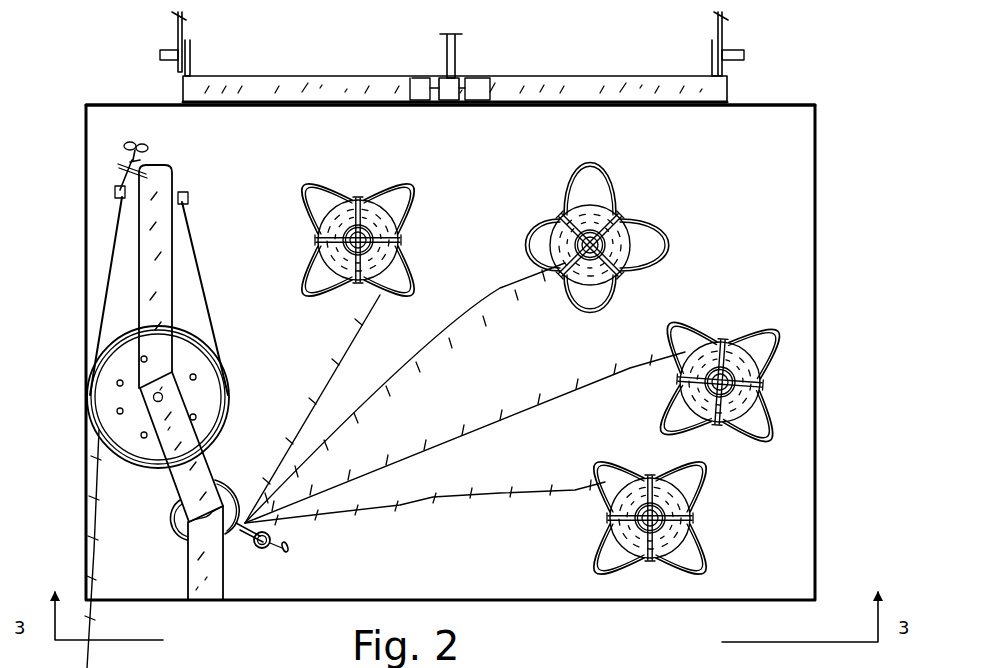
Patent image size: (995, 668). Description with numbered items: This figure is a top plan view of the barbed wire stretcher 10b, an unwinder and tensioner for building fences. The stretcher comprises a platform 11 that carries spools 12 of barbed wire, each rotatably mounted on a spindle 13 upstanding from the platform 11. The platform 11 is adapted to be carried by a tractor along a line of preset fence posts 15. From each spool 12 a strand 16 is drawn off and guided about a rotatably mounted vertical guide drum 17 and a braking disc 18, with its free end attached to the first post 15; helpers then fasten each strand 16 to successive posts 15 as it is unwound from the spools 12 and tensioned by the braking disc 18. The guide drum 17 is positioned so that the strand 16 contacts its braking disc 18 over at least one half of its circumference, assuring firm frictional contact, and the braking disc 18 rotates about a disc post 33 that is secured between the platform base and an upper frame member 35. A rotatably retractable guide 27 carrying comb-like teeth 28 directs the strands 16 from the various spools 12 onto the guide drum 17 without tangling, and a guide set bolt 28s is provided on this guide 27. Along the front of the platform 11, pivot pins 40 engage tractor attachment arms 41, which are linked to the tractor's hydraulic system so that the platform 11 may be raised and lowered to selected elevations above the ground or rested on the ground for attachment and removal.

The barbed wire stretcher 10b is at (786, 97).
The platform 11 is at (818, 307).
The spools 12 is at (397, 200).
The spindles 13 is at (590, 240).
The fence posts 15 is at (561, 74).
The strand 16 is at (462, 330).
The guide drum 17 is at (230, 500).
The braking disc 18 is at (142, 443).
The rotatably retractable guide 27 is at (263, 556).
The comb-like teeth 28 is at (239, 541).
The guide set bolt 28s is at (288, 548).
The disc post 33 is at (153, 398).
The upper frame member 35 is at (160, 262).
The pivot pins 40 is at (171, 50).
The tractor attachment arms 41 is at (183, 31).